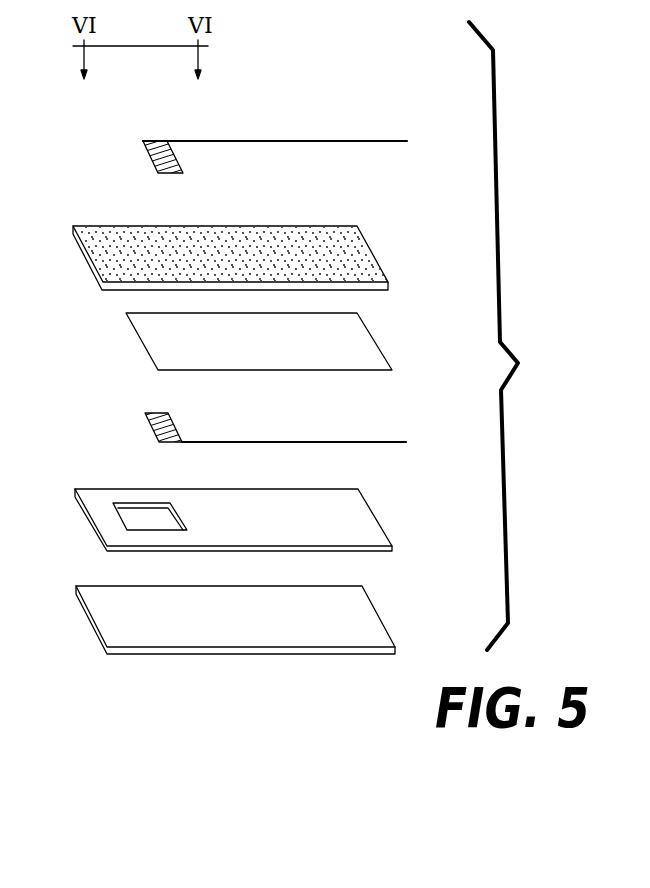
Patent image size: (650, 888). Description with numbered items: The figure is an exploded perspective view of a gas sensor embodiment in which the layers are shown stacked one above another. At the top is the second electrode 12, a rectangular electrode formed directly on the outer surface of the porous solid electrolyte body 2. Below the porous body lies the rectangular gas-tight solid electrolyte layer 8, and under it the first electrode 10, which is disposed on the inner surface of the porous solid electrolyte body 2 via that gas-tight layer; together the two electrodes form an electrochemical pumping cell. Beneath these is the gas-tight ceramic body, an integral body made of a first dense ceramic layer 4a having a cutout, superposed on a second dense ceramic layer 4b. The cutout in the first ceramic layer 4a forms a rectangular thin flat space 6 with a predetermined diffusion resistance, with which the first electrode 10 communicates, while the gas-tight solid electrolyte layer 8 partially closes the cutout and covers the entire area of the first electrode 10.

The porous solid electrolyte body 2 is at (95, 243).
The first dense ceramic layer 4a is at (245, 520).
The second dense ceramic layer 4b is at (363, 630).
The thin flat space 6 is at (133, 517).
The gas-tight solid electrolyte layer 8 is at (363, 343).
The first electrode 10 is at (150, 422).
The second electrode 12 is at (152, 150).